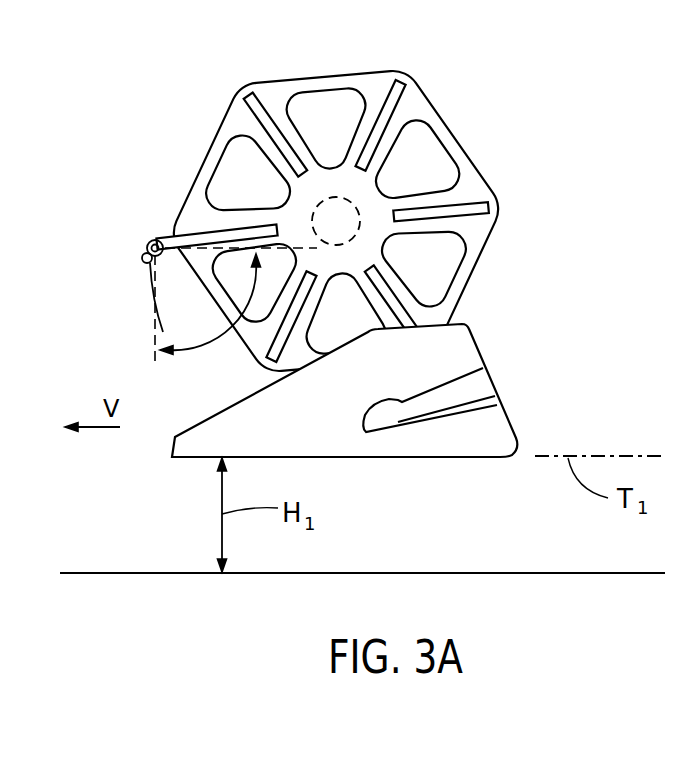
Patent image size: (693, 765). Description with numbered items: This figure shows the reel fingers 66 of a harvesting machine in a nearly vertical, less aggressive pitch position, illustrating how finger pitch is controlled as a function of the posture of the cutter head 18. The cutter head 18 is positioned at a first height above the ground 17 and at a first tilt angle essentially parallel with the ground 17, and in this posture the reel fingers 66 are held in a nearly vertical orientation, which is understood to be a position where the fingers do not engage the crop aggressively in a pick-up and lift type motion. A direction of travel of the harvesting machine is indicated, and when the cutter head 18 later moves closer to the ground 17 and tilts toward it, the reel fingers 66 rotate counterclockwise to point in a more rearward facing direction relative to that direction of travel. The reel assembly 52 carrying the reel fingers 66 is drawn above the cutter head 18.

The wheel 52 is at (495, 150).
The cutter head 18 is at (553, 357).
The reel fingers 66 is at (150, 290).
The ground 17 is at (558, 573).